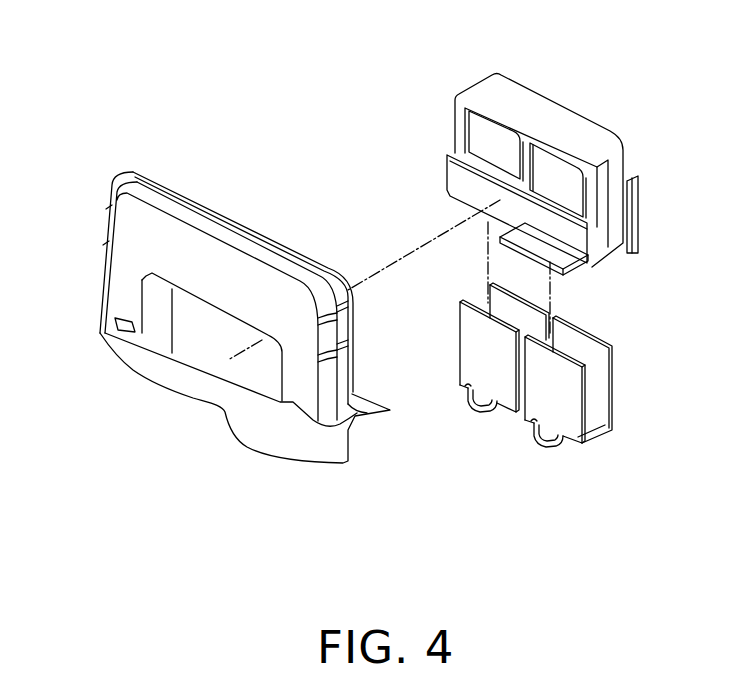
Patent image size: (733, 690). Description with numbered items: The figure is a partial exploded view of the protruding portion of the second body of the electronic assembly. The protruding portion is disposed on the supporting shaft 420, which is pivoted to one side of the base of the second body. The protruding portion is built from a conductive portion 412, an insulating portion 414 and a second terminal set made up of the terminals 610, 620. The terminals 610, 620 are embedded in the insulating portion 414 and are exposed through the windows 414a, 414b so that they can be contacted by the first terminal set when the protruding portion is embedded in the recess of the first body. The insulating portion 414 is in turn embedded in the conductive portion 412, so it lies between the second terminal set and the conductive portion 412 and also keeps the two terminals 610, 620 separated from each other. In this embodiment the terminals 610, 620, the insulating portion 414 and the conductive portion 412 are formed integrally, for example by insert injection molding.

The conductive portion 412 is at (117, 182).
The supporting shaft 420 is at (282, 435).
The insulating portion 414 is at (472, 85).
The window 414a is at (493, 135).
The window 414b is at (560, 175).
The terminal 610 is at (487, 367).
The terminal 620 is at (550, 398).